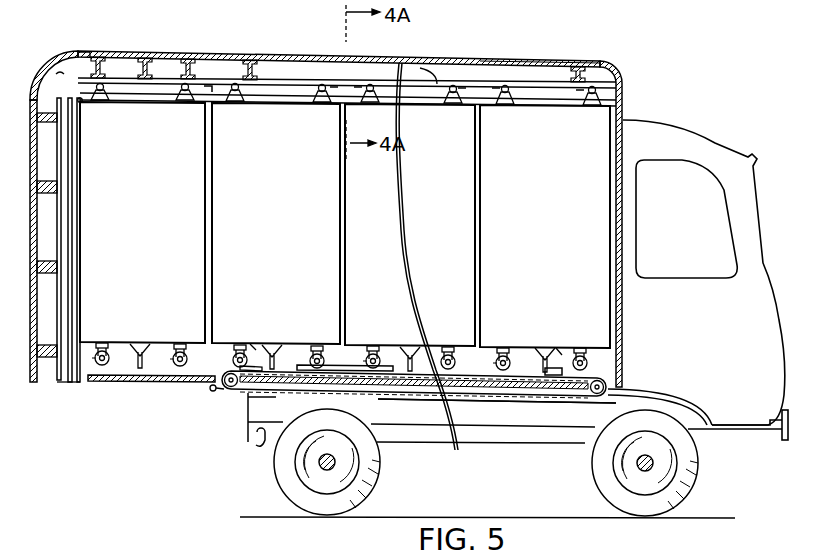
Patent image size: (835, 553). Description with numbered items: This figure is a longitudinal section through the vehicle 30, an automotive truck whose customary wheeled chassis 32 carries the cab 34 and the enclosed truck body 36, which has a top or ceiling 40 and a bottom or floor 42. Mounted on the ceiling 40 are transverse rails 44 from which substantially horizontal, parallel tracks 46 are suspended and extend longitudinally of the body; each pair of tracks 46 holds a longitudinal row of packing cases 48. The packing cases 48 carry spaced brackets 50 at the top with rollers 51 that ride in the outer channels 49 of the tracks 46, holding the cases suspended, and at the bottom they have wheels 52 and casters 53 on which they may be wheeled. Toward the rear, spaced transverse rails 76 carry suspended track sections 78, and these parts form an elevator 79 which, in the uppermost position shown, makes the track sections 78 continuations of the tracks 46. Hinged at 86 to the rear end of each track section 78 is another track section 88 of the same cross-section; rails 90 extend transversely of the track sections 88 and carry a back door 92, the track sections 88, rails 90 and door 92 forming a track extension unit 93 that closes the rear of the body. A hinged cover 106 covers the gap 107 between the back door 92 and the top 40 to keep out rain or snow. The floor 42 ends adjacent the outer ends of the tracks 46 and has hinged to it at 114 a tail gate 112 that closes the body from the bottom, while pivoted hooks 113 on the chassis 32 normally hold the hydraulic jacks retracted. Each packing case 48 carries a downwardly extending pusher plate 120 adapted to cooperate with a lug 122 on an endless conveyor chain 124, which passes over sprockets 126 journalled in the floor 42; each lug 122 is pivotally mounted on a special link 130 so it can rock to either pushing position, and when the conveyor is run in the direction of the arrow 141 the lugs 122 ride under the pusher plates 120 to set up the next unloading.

The vehicle 30 is at (632, 77).
The wheeled chassis 32 is at (425, 457).
The cab 34 is at (702, 137).
The truck body 36 is at (320, 54).
The top or ceiling 40 is at (497, 58).
The bottom or floor 42 is at (422, 397).
The transverse rails 44 is at (268, 76).
The tracks 46 is at (437, 77).
The packing cases 48 is at (207, 213).
The outer channels 49 is at (427, 92).
The brackets 50 is at (185, 99).
The rollers 51 is at (208, 88).
The wheels 52 is at (188, 357).
The casters 53 is at (110, 357).
The transverse rails 76 is at (106, 64).
The track sections 78 is at (162, 88).
The elevator 79 is at (79, 69).
The hinge 86 is at (82, 102).
The track section 88 is at (65, 220).
The rails 90 is at (43, 180).
The back door 92 is at (32, 195).
The track extension unit 93 is at (50, 392).
The hinged cover 106 is at (33, 92).
The gap 107 is at (56, 75).
The tail gate 112 is at (155, 384).
The pivoted hooks 113 is at (255, 450).
The hinge 114 is at (214, 389).
The pusher plate 120 is at (150, 347).
The lug 122 is at (253, 343).
The endless conveyor chains 124 is at (288, 366).
The sprockets 126 is at (612, 378).
The special link 130 is at (560, 367).
The arrow 141 is at (272, 352).